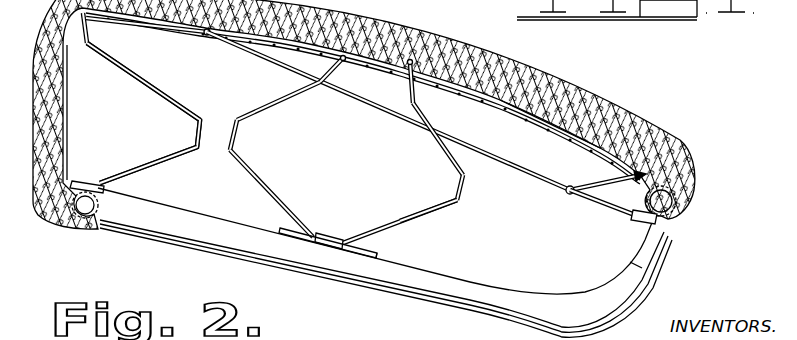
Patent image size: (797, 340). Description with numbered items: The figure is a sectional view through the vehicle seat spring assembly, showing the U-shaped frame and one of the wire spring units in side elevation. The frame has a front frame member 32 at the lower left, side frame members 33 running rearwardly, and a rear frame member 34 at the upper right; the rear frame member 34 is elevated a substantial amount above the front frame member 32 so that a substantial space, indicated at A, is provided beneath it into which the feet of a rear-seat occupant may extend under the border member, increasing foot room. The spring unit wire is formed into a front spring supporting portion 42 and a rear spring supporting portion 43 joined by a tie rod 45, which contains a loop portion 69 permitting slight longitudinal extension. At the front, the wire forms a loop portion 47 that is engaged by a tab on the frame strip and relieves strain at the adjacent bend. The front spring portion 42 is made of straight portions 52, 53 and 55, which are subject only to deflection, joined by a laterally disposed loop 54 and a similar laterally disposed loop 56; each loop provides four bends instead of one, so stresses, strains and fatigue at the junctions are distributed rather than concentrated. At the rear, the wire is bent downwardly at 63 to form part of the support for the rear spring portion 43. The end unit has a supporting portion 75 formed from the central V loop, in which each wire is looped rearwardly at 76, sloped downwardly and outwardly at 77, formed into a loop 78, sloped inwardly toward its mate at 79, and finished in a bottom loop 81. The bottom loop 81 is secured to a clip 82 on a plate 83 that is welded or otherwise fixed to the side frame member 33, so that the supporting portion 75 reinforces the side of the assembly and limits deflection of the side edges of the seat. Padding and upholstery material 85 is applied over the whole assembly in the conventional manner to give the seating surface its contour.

The front frame member 32 is at (97, 226).
The side frame members 33 is at (465, 312).
The rear frame member 34 is at (681, 207).
The front spring supporting portion 42 is at (183, 101).
The rear spring supporting portion 43 is at (580, 201).
The tie rod 45 is at (388, 116).
The loop portion 47 is at (92, 178).
The straight portion 52 is at (153, 166).
The straight portion 53 is at (152, 88).
The laterally disposed loop 54 is at (197, 131).
The straight portion 55 is at (137, 22).
The laterally disposed loop 56 is at (90, 33).
The downwardly directed straight portion 63 is at (604, 205).
The loop portion 69 is at (517, 162).
The supporting portion 75 is at (440, 219).
The rearwardly looped portion 76 is at (333, 62).
The downwardly and outwardly sloped portion 77 is at (272, 110).
The loop 78 is at (240, 137).
The inwardly sloped portion 79 is at (278, 193).
The bottom loop 81 is at (320, 250).
The clip 82 is at (332, 236).
The plate 83 is at (370, 252).
The padding and upholstery material 85 is at (527, 63).
The area below rear frame member A is at (641, 265).